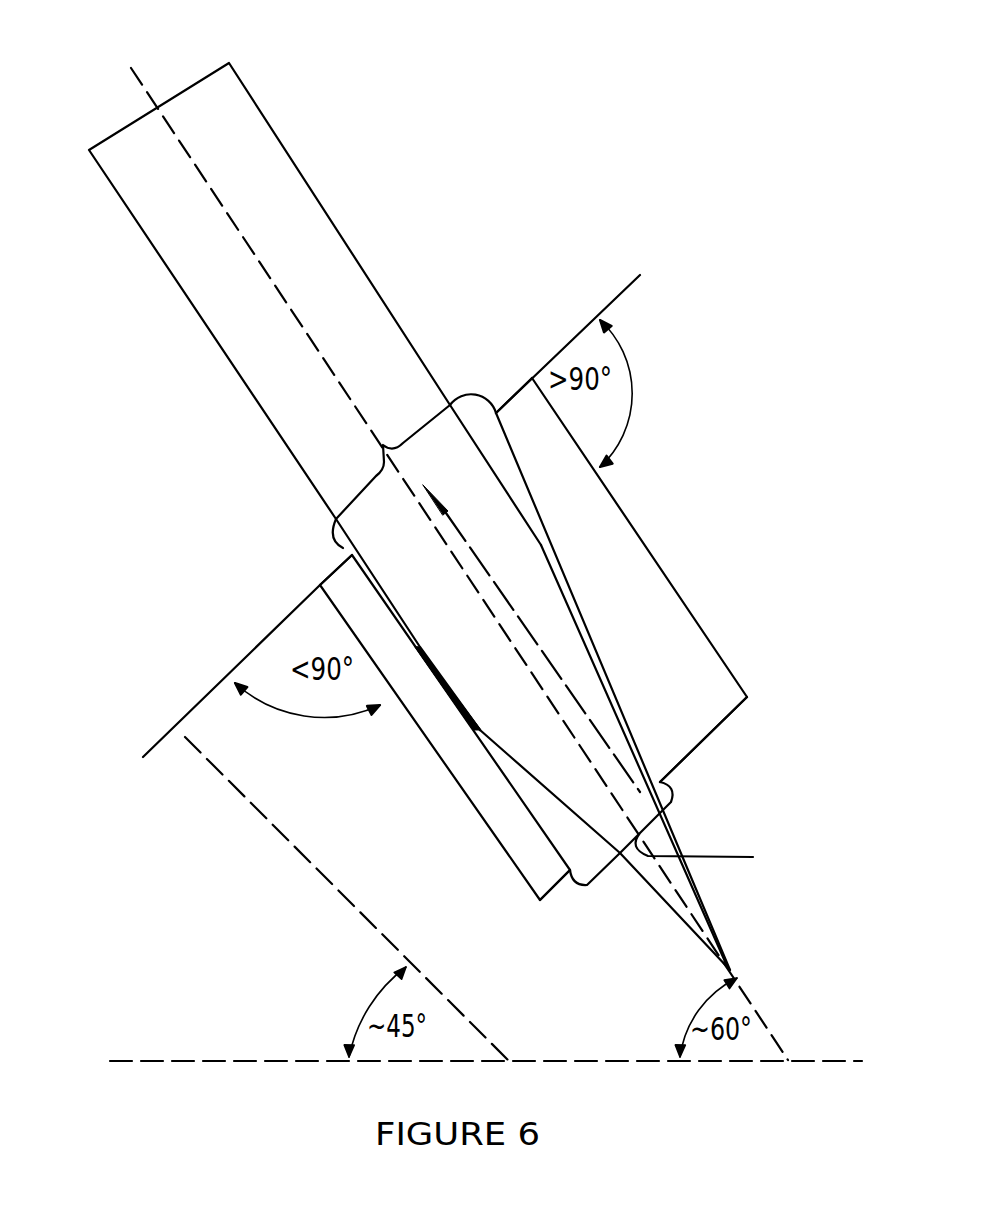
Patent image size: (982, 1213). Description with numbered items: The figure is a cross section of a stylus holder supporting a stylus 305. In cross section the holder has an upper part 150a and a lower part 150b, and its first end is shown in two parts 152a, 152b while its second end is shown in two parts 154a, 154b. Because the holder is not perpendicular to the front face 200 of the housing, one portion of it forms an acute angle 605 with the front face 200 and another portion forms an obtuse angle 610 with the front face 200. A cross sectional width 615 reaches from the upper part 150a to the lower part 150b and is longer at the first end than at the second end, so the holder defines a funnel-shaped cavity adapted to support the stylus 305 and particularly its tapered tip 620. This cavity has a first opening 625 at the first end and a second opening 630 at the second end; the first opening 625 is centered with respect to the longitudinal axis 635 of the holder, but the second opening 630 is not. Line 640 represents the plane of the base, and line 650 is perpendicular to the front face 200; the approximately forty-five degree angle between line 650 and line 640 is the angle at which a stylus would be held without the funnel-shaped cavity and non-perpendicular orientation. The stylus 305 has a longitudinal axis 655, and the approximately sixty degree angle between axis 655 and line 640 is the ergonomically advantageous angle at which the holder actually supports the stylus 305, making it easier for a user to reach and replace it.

The stylus 305 is at (340, 234).
The longitudinal axis of the stylus 655 is at (131, 68).
The first opening 625 is at (372, 437).
The obtuse angle 610 is at (593, 402).
The first end part 152a is at (527, 417).
The upper part of the stylus holder 150a is at (643, 603).
The second end part 154a is at (662, 693).
The second opening 630 is at (715, 832).
The front face 200 is at (262, 644).
The first end part 152b is at (357, 598).
The lower part of the stylus holder 150b is at (458, 768).
The second end part 154b is at (530, 865).
The acute angle 605 is at (327, 700).
The cross sectional width 615 is at (498, 712).
The longitudinal axis of the stylus holder 635 is at (445, 513).
The tapered tip 620 is at (645, 883).
The line perpendicular to the front face 650 is at (266, 820).
The line representing the plane of the base 640 is at (182, 1058).